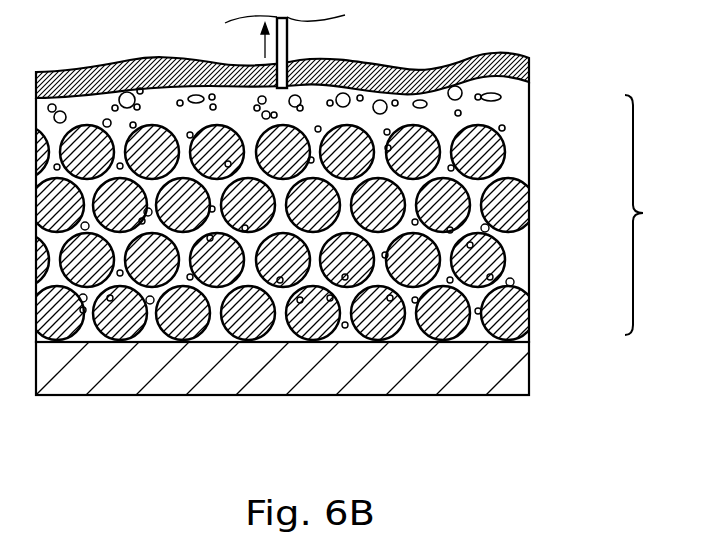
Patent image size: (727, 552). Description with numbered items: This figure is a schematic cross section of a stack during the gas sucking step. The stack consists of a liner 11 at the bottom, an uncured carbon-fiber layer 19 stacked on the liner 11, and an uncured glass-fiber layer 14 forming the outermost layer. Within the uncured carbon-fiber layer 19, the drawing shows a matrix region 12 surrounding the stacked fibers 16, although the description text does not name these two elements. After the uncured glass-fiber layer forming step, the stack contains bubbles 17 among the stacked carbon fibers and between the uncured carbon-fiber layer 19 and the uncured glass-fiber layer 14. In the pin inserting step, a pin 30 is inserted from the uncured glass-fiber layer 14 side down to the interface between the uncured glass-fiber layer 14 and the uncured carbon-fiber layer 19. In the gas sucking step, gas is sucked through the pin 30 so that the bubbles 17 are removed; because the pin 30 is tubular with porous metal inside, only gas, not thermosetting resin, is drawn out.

The liner 11 is at (515, 378).
The light-emitting layer 12 is at (500, 260).
The uncured glass-fiber layer 14 is at (529, 60).
The phosphor particles 16 is at (517, 150).
The bubbles 17 is at (501, 97).
The uncured carbon-fiber layer 19 is at (654, 215).
The pin 30 is at (288, 42).